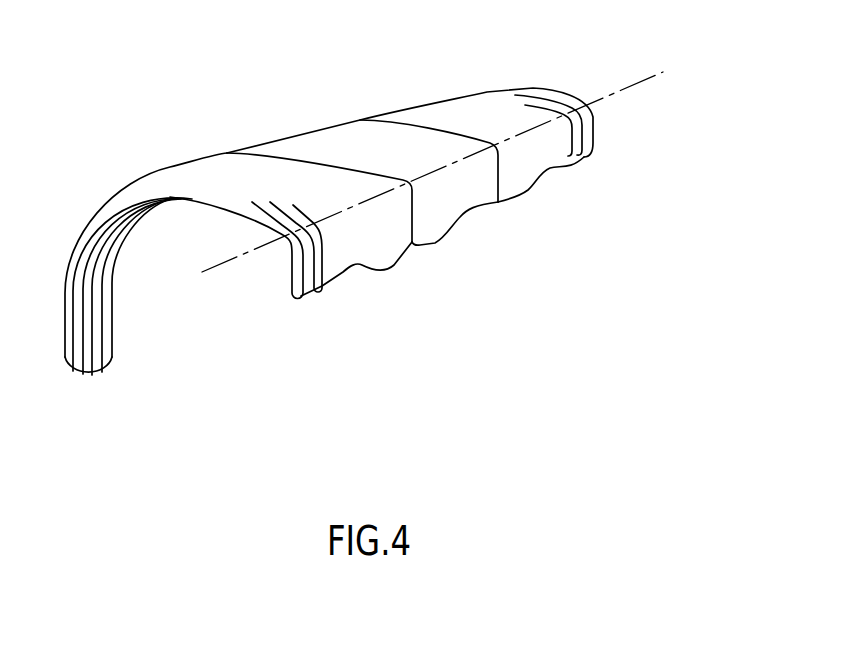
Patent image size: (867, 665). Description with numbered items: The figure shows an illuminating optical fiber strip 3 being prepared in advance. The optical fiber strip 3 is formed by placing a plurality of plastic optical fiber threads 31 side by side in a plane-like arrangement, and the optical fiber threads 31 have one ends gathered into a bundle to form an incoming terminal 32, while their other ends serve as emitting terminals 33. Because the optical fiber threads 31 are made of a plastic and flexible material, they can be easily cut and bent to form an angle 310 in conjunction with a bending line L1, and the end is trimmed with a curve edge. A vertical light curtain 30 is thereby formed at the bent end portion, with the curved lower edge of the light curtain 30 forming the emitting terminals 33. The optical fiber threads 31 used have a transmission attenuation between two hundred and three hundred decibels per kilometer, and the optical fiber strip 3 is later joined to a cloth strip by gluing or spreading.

The optical fiber strip 3 is at (377, 248).
The light curtain 30 is at (527, 158).
The optical fiber threads 31 is at (315, 258).
The incoming terminal 32 is at (84, 348).
The emitting terminals 33 is at (298, 298).
The angle 310 is at (269, 251).
The bending line L1 is at (446, 165).